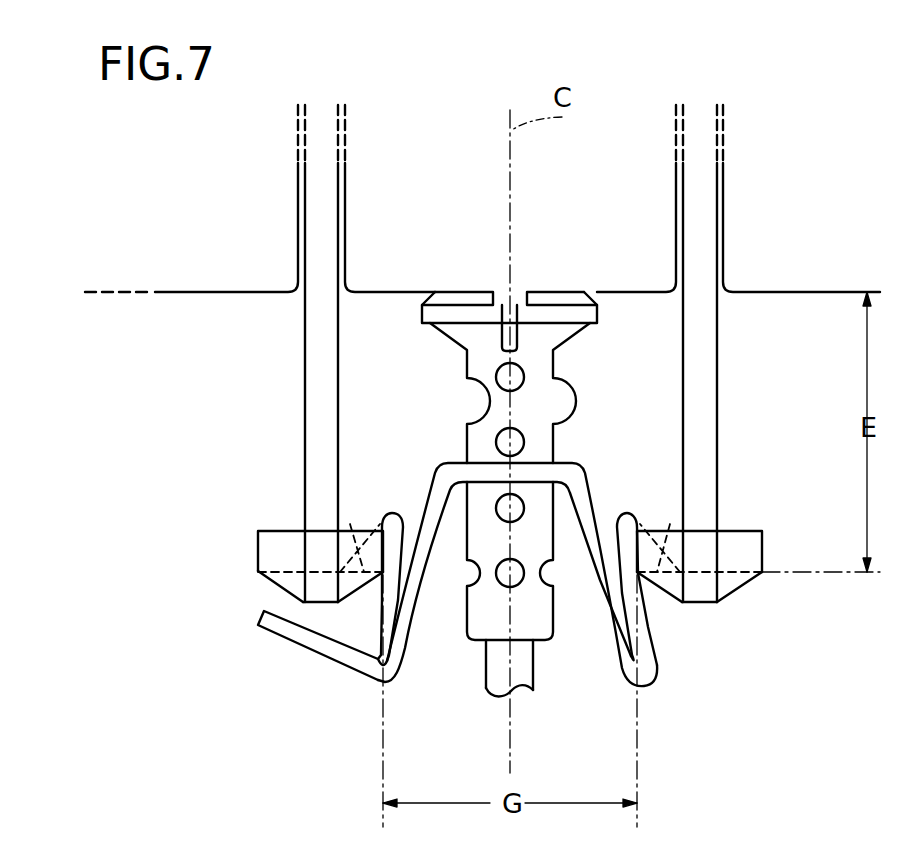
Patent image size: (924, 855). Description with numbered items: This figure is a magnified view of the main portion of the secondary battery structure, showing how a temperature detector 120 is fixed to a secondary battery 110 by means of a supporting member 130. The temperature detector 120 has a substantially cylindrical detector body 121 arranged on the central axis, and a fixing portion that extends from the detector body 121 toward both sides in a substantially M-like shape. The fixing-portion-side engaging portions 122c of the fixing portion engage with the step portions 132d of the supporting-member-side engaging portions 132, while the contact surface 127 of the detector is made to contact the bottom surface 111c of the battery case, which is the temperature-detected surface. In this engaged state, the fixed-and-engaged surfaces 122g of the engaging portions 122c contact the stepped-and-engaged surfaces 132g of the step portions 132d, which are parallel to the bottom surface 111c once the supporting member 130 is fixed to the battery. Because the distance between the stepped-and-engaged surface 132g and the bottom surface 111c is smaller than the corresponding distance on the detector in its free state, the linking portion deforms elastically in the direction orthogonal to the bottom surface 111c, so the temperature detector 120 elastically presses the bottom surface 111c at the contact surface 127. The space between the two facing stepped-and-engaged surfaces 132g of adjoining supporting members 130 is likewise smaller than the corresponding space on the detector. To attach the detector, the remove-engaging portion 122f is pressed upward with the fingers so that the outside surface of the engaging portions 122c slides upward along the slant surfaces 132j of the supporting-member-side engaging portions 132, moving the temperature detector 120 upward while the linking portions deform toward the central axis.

The secondary battery 110 is at (430, 207).
The bottom surface 111c is at (625, 294).
The supporting member 130 is at (313, 363).
The temperature detector 120 is at (506, 436).
The contact surface 127 is at (557, 293).
The detector body 121 is at (545, 445).
The fixing-portion-side engaging portion 122c is at (640, 555).
The remove-engaging portion 122f is at (268, 630).
The fixed-and-engaged surface 122g is at (340, 587).
The supporting-member-side engaging portion 132 is at (267, 550).
The stepped-and-engaged surface 132g is at (363, 570).
The slant surface 132j is at (743, 590).
The step portion 132d is at (672, 588).